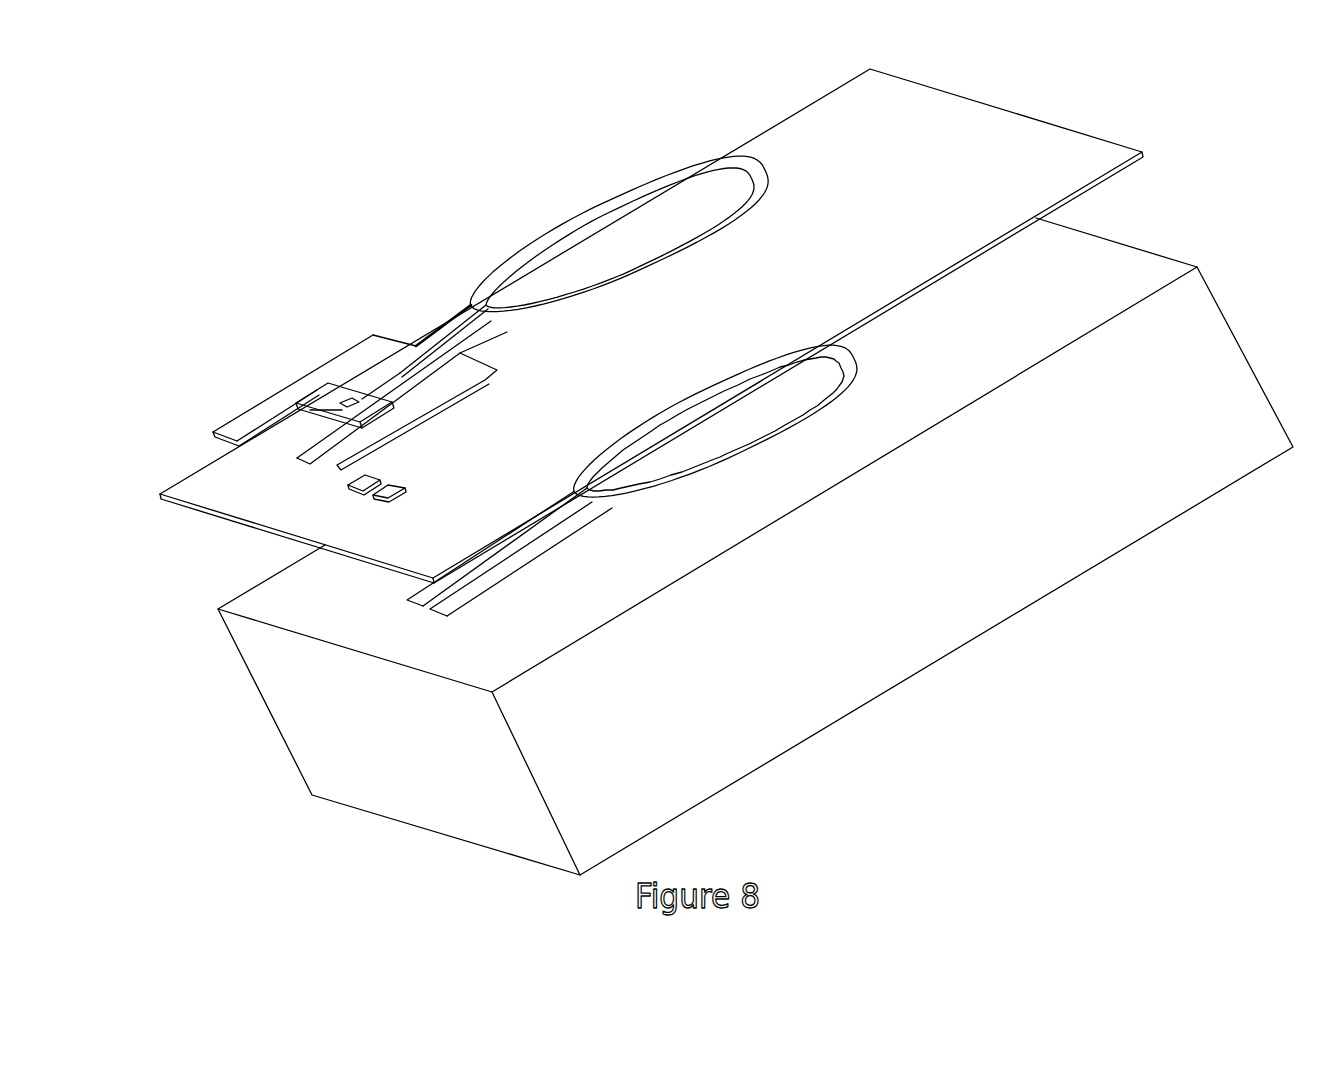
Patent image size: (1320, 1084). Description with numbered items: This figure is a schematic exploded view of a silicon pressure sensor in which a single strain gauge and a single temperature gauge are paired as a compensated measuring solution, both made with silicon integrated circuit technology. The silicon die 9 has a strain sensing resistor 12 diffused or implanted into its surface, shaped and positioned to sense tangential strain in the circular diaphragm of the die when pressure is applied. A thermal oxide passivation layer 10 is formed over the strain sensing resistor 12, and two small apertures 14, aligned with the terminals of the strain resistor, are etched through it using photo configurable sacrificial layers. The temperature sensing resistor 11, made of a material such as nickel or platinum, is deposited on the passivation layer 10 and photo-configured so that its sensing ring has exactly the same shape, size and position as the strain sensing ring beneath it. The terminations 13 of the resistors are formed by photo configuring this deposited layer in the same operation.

The silicon die 9 is at (935, 580).
The thermal oxide passivation layer 10 is at (848, 108).
The temperature sensing resistor 11 is at (748, 178).
The strain sensing resistor 12 is at (855, 355).
The terminations 13 is at (243, 425).
The apertures 14 is at (380, 495).